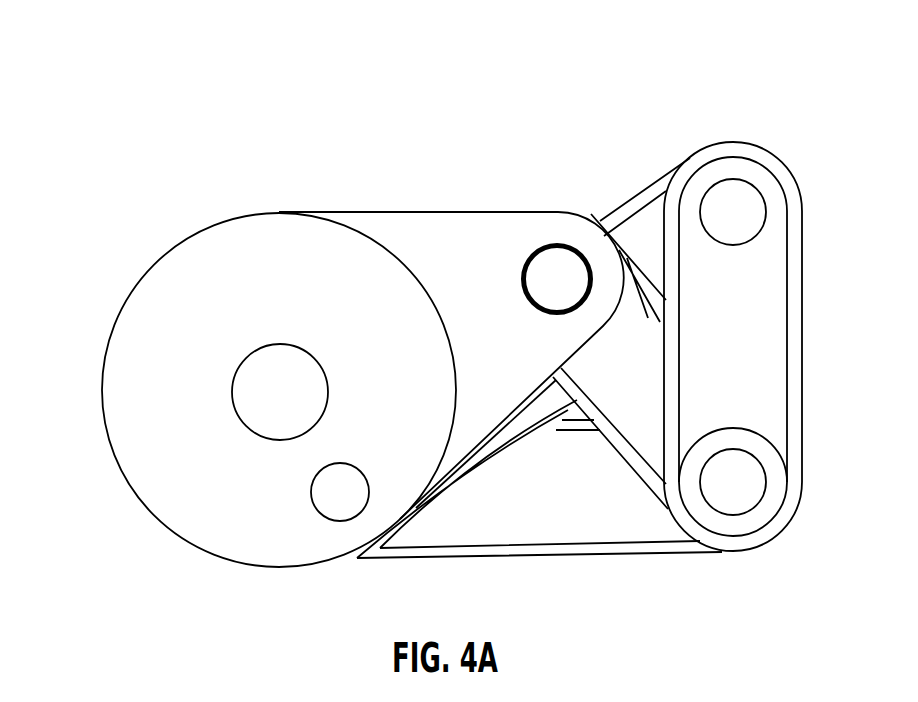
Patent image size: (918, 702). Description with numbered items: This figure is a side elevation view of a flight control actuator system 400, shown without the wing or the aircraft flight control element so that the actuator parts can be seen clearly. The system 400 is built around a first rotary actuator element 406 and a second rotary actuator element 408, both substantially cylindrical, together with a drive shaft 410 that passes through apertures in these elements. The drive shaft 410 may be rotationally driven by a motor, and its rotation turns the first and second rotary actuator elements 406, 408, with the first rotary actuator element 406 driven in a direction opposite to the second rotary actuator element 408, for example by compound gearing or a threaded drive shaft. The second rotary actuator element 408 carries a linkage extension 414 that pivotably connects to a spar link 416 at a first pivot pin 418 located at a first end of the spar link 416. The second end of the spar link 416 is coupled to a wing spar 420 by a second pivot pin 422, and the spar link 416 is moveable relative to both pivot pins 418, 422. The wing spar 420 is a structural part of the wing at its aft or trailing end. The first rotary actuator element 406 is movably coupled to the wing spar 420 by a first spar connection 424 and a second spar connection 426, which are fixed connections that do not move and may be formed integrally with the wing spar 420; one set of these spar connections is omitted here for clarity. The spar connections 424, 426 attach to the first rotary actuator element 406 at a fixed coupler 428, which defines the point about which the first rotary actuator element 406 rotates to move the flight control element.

The flight control actuator system 400 is at (753, 57).
The first rotary actuator element 406 is at (140, 310).
The second rotary actuator element 408 is at (345, 212).
The drive shaft 410 is at (253, 393).
The linkage extension 414 is at (450, 228).
The spar link 416 is at (610, 227).
The first pivot pin 418 is at (563, 261).
The wing spar 420 is at (777, 340).
The second pivot pin 422 is at (750, 470).
The first spar connection 424 is at (605, 527).
The second spar connection 426 is at (657, 190).
The fixed coupler 428 is at (343, 508).